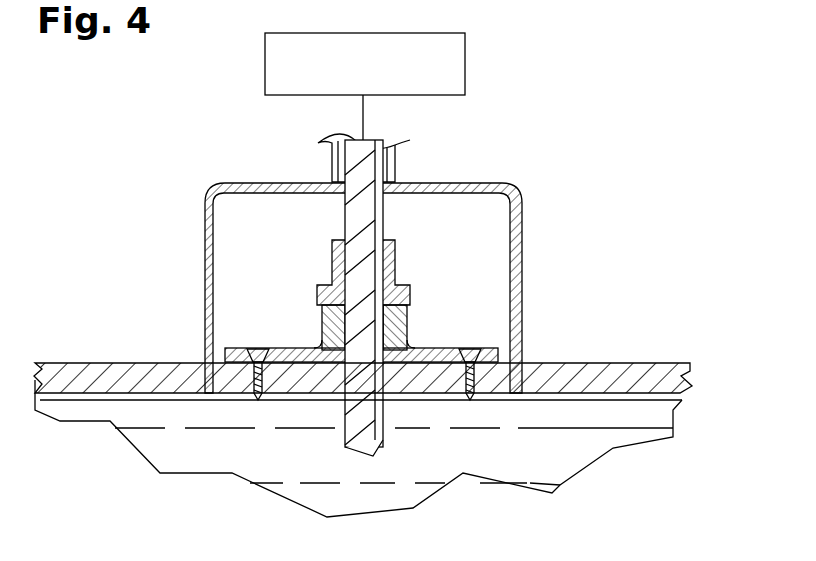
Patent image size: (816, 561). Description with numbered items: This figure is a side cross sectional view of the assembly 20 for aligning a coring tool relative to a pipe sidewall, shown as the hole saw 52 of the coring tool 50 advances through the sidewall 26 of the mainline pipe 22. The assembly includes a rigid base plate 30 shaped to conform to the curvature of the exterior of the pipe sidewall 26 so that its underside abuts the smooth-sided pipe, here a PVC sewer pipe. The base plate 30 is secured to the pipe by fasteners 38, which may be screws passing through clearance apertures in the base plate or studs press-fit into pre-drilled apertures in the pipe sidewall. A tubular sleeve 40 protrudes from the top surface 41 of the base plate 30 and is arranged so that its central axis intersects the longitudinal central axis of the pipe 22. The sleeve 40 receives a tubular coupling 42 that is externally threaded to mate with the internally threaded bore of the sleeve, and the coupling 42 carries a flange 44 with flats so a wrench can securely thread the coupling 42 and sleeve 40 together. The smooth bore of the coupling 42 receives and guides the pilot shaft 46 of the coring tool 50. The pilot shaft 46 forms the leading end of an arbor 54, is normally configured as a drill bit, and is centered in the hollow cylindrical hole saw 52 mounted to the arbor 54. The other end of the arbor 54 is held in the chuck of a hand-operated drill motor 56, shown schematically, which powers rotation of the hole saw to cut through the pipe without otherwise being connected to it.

The assembly 20 is at (268, 258).
The mainline pipe 22 is at (82, 362).
The pipe sidewall 26 is at (635, 363).
The base plate 30 is at (490, 357).
The fasteners 38 is at (255, 349).
The tubular sleeve 40 is at (407, 325).
The top surface 41 is at (295, 348).
The tubular coupling 42 is at (395, 262).
The flange 44 is at (410, 298).
The pilot shaft 46 is at (385, 440).
The coring tool 50 is at (300, 168).
The hole saw 52 is at (522, 252).
The arbor 54 is at (400, 165).
The drill motor 56 is at (418, 33).